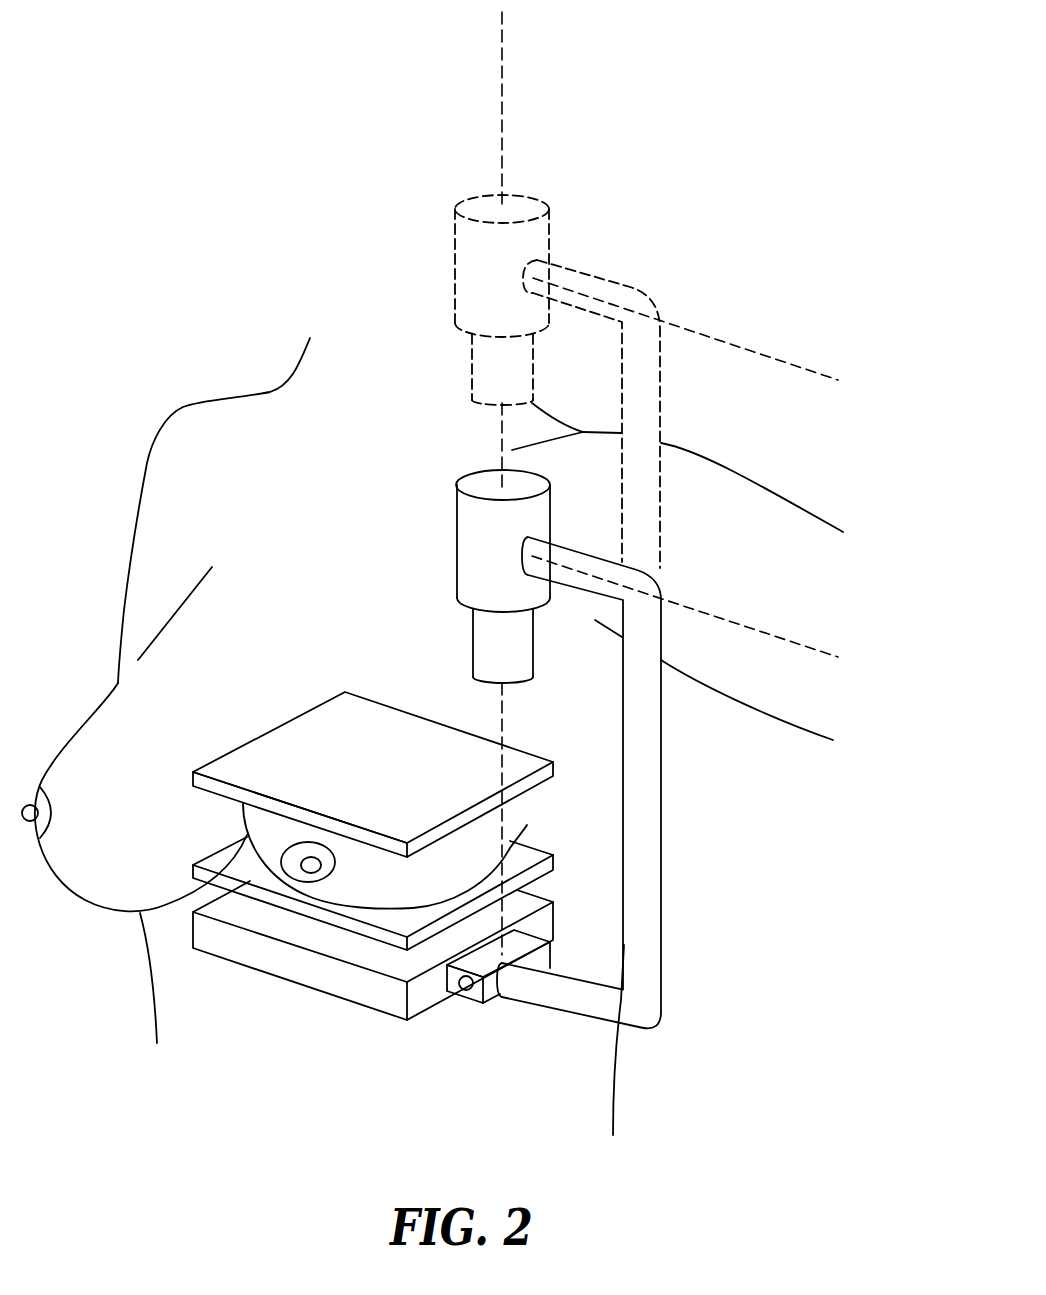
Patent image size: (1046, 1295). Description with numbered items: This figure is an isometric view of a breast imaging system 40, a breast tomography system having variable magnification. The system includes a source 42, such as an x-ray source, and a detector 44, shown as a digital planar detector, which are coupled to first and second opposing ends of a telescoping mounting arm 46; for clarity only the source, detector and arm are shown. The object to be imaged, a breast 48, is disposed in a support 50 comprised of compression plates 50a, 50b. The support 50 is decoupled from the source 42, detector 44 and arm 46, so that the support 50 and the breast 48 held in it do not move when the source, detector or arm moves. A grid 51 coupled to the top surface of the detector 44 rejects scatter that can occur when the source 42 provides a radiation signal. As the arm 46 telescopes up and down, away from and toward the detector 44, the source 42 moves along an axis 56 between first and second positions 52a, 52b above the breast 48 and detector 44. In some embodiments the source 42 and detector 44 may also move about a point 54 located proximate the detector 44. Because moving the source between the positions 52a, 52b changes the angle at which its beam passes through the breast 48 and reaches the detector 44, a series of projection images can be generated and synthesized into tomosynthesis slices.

The breast imaging system 40 is at (235, 68).
The source 42 is at (470, 265).
The detector 44 is at (258, 960).
The mounting arm 46 is at (647, 413).
The breast 48 is at (547, 808).
The support 50 is at (286, 697).
The compression plate 50a is at (240, 768).
The compression plate 50b is at (227, 862).
The grid 51 is at (280, 923).
The first position 52a is at (711, 618).
The second position 52b is at (713, 341).
The point 54 is at (468, 990).
The axis 56 is at (505, 73).